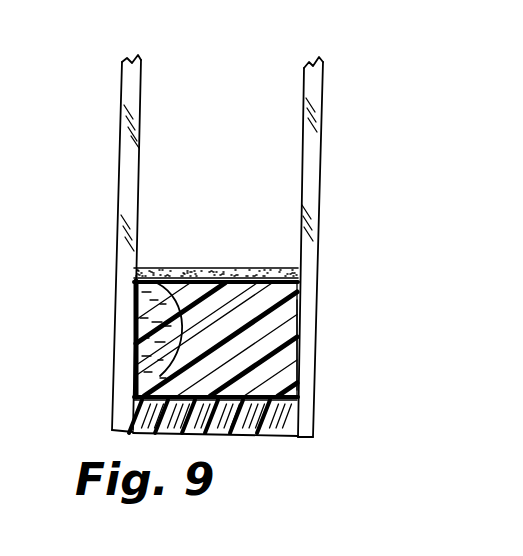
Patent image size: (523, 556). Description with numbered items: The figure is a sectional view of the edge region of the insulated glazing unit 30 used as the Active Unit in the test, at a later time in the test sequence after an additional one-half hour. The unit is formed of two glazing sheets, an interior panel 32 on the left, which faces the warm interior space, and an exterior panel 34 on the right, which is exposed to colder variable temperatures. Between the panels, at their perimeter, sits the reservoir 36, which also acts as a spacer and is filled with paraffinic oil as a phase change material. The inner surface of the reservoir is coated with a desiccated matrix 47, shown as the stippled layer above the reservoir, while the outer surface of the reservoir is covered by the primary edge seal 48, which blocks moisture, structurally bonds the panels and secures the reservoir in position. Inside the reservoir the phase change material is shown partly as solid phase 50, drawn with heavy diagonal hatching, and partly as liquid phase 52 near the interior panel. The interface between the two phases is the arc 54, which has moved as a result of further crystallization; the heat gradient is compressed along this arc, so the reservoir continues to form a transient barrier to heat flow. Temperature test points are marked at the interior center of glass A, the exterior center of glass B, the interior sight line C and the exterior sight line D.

The insulated glazing unit 30 is at (114, 58).
The interior panel 32 is at (138, 173).
The exterior panel 34 is at (322, 162).
The reservoir 36 is at (297, 377).
The desiccated matrix 47 is at (255, 268).
The primary edge seal 48 is at (277, 437).
The solid phase 50 is at (298, 339).
The liquid phase 52 is at (162, 363).
The arc 54 is at (175, 328).
The interior center of glass test point A is at (128, 109).
The exterior center of glass test point B is at (325, 88).
The interior sight line test point C is at (127, 263).
The exterior sight line test point D is at (317, 262).